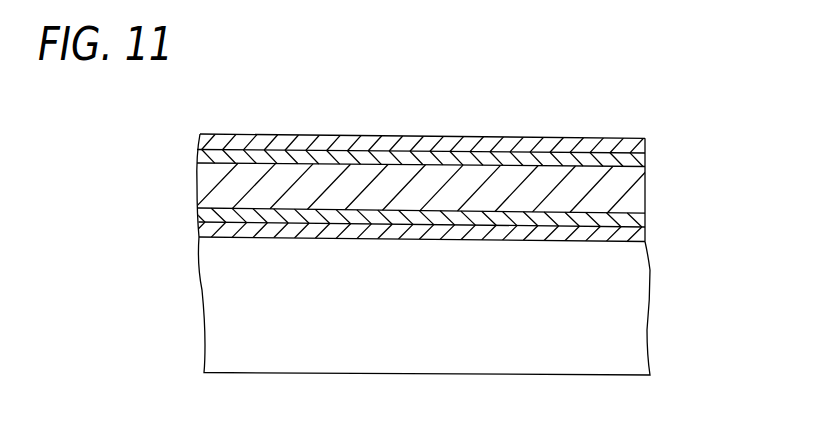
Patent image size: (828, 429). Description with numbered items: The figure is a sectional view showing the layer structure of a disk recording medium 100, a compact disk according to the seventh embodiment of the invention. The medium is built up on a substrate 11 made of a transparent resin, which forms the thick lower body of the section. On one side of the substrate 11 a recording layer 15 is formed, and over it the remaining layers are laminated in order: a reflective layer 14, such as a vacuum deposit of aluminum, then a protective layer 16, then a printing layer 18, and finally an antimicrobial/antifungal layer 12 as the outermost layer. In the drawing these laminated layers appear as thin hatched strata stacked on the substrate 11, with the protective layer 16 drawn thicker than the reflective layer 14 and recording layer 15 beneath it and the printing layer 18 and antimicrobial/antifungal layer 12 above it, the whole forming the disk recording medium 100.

The disk recording medium 100 is at (587, 105).
The substrate 11 is at (655, 244).
The antimicrobial/antifungal layer 12 is at (644, 141).
The printing layer 18 is at (646, 157).
The protective layer 16 is at (643, 187).
The reflective layer 14 is at (645, 213).
The recording layer 15 is at (648, 240).